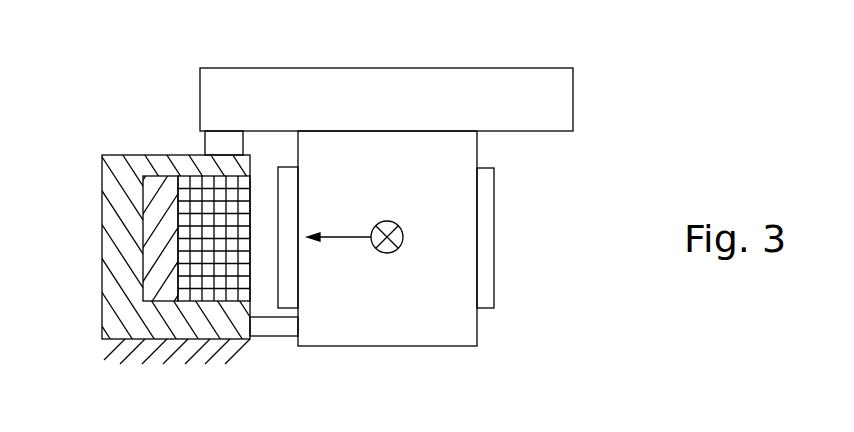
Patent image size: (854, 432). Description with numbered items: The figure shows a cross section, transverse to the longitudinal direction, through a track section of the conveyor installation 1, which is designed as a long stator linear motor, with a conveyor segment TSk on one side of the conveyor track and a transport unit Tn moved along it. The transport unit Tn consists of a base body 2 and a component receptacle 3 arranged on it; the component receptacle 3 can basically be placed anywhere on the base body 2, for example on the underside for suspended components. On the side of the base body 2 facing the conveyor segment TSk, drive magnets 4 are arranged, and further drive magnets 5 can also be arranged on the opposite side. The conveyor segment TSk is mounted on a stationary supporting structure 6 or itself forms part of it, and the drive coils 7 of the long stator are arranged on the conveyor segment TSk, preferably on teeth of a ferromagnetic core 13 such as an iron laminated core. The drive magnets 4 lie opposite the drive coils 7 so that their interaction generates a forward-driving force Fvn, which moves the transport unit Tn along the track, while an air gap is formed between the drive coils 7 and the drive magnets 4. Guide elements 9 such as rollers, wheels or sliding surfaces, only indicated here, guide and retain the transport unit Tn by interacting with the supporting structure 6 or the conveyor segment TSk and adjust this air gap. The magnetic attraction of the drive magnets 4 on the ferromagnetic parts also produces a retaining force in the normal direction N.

The conveyor installation 1 is at (598, 159).
The base body 2 is at (418, 307).
The component receptacle 3 is at (497, 105).
The drive magnets 4 is at (288, 264).
The drive magnets 5 is at (483, 243).
The stationary supporting structure 6 is at (122, 227).
The drive coils 7 is at (212, 258).
The guide elements 9 is at (225, 130).
The ferromagnetic core 13 is at (163, 205).
The transport unit Tn is at (367, 97).
The conveyor segment TSk is at (145, 155).
The forward-driving force Fvn is at (387, 218).
The normal direction N is at (339, 226).